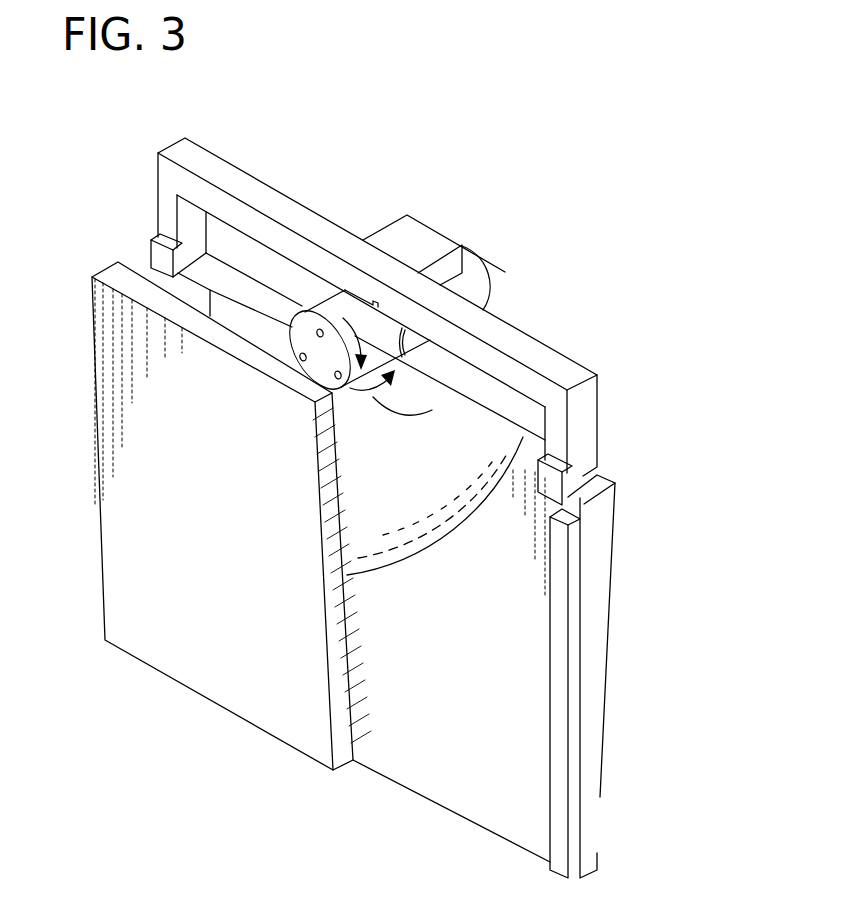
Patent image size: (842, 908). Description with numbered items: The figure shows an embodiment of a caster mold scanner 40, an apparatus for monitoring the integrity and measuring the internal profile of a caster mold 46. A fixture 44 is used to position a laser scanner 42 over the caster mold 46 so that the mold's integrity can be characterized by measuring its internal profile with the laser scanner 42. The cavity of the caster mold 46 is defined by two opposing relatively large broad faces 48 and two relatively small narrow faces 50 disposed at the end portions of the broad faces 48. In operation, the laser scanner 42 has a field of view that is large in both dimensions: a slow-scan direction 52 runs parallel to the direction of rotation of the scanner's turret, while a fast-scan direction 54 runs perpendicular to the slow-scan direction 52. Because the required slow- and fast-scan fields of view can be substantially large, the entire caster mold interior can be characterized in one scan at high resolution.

The caster mold scanner 40 is at (513, 116).
The laser scanner 42 is at (473, 287).
The fixture 44 is at (569, 373).
The caster mold 46 is at (168, 727).
The broad faces 48 is at (138, 560).
The narrow faces 50 is at (147, 270).
The slow-scan direction 52 is at (348, 318).
The fast-scan direction 54 is at (432, 410).